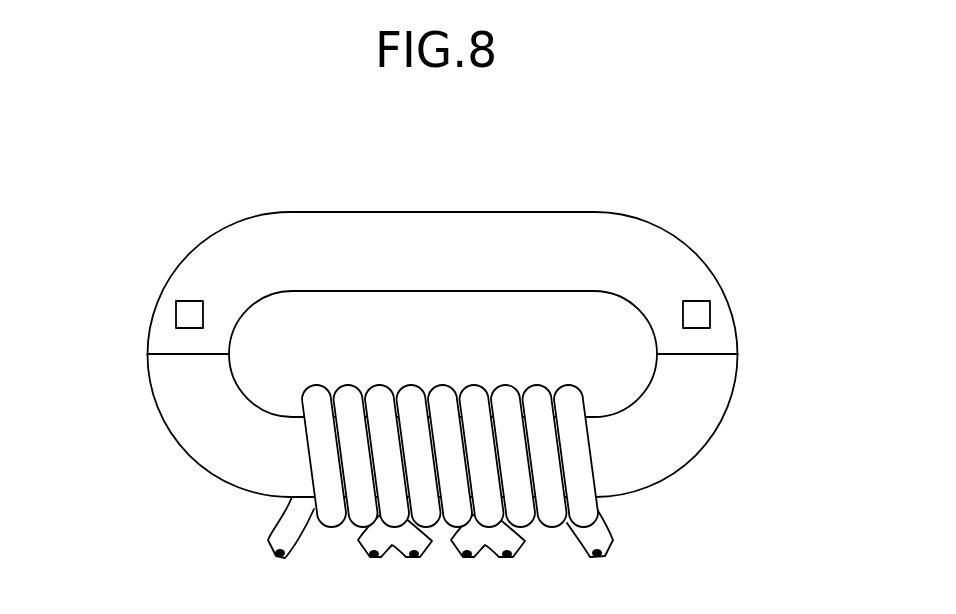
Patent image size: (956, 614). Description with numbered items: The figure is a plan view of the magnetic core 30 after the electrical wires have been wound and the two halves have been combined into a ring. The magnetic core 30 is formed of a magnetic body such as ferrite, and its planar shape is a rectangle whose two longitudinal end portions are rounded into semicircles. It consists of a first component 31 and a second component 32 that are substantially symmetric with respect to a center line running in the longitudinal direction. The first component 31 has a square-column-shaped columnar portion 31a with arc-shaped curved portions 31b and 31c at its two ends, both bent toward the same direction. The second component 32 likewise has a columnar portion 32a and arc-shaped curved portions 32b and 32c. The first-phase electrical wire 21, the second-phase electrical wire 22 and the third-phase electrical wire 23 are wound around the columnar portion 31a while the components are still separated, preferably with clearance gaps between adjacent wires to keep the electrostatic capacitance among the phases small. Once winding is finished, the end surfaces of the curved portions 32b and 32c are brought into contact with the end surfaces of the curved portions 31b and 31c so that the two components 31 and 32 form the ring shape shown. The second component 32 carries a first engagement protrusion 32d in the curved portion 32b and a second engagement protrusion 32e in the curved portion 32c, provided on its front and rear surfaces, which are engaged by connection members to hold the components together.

The magnetic core 30 is at (420, 137).
The first component 31 is at (252, 393).
The second component 32 is at (308, 208).
The columnar portion 31a is at (300, 468).
The curved portion 31b is at (180, 388).
The curved portion 31c is at (685, 388).
The columnar portion 32a is at (458, 238).
The curved portion 32b is at (212, 272).
The curved portion 32c is at (672, 271).
The first engagement protrusion 32d is at (175, 313).
The second engagement protrusion 32e is at (710, 314).
The first-phase electrical wire 21 is at (344, 386).
The second-phase electrical wire 22 is at (437, 386).
The third-phase electrical wire 23 is at (528, 386).